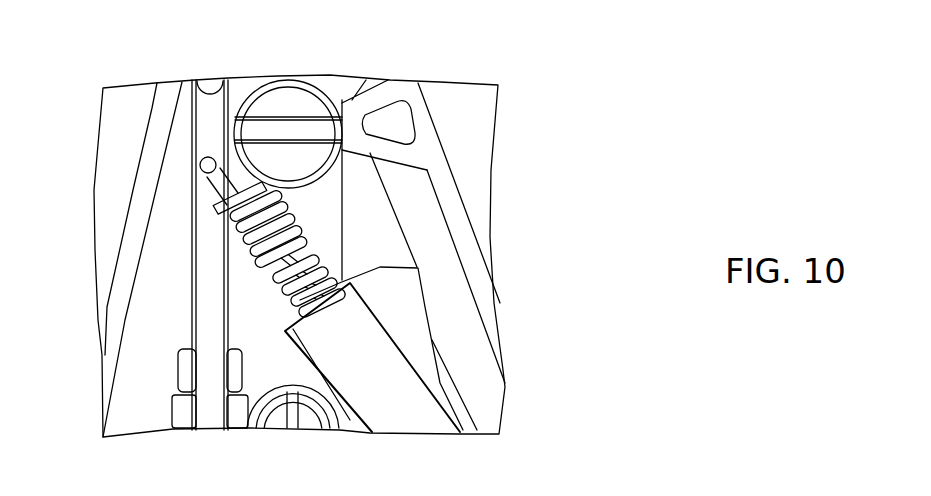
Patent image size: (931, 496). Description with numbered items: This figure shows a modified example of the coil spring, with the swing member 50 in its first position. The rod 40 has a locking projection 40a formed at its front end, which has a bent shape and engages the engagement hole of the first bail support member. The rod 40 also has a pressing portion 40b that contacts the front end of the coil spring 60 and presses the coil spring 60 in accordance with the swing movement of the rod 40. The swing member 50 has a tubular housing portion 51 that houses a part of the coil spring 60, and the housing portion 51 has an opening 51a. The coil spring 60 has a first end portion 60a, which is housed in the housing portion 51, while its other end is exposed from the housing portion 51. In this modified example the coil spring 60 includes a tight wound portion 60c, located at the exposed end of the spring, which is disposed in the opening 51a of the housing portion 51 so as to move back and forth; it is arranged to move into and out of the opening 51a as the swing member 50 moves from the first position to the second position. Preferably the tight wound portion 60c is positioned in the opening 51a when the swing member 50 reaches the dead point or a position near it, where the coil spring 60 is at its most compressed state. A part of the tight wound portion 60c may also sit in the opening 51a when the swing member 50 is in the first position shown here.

The rod 40 is at (185, 252).
The locking projection 40a is at (200, 163).
The pressing portion 40b is at (218, 202).
The swing member 50 is at (295, 347).
The housing portion 51 is at (291, 388).
The opening 51a is at (340, 116).
The coil spring 60 is at (188, 255).
The first end portion 60a is at (222, 222).
The tight wound portion 60c is at (253, 276).